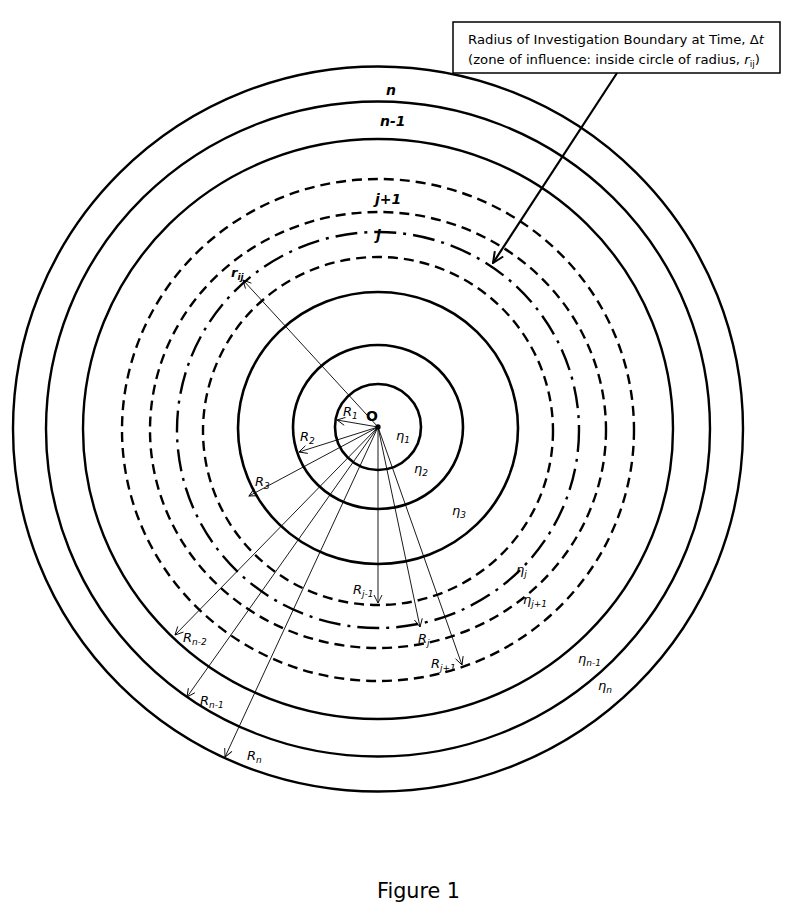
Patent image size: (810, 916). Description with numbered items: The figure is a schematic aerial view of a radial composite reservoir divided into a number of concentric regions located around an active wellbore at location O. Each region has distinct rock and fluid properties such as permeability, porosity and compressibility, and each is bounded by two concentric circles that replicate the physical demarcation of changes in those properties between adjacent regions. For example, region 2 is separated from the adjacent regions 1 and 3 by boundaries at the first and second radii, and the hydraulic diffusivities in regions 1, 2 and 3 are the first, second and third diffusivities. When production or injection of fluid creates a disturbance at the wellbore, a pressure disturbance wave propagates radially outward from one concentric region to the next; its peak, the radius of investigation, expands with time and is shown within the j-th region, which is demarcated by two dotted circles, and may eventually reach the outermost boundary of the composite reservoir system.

The region 1 is at (378, 427).
The region 2 is at (378, 427).
The region 3 is at (378, 428).